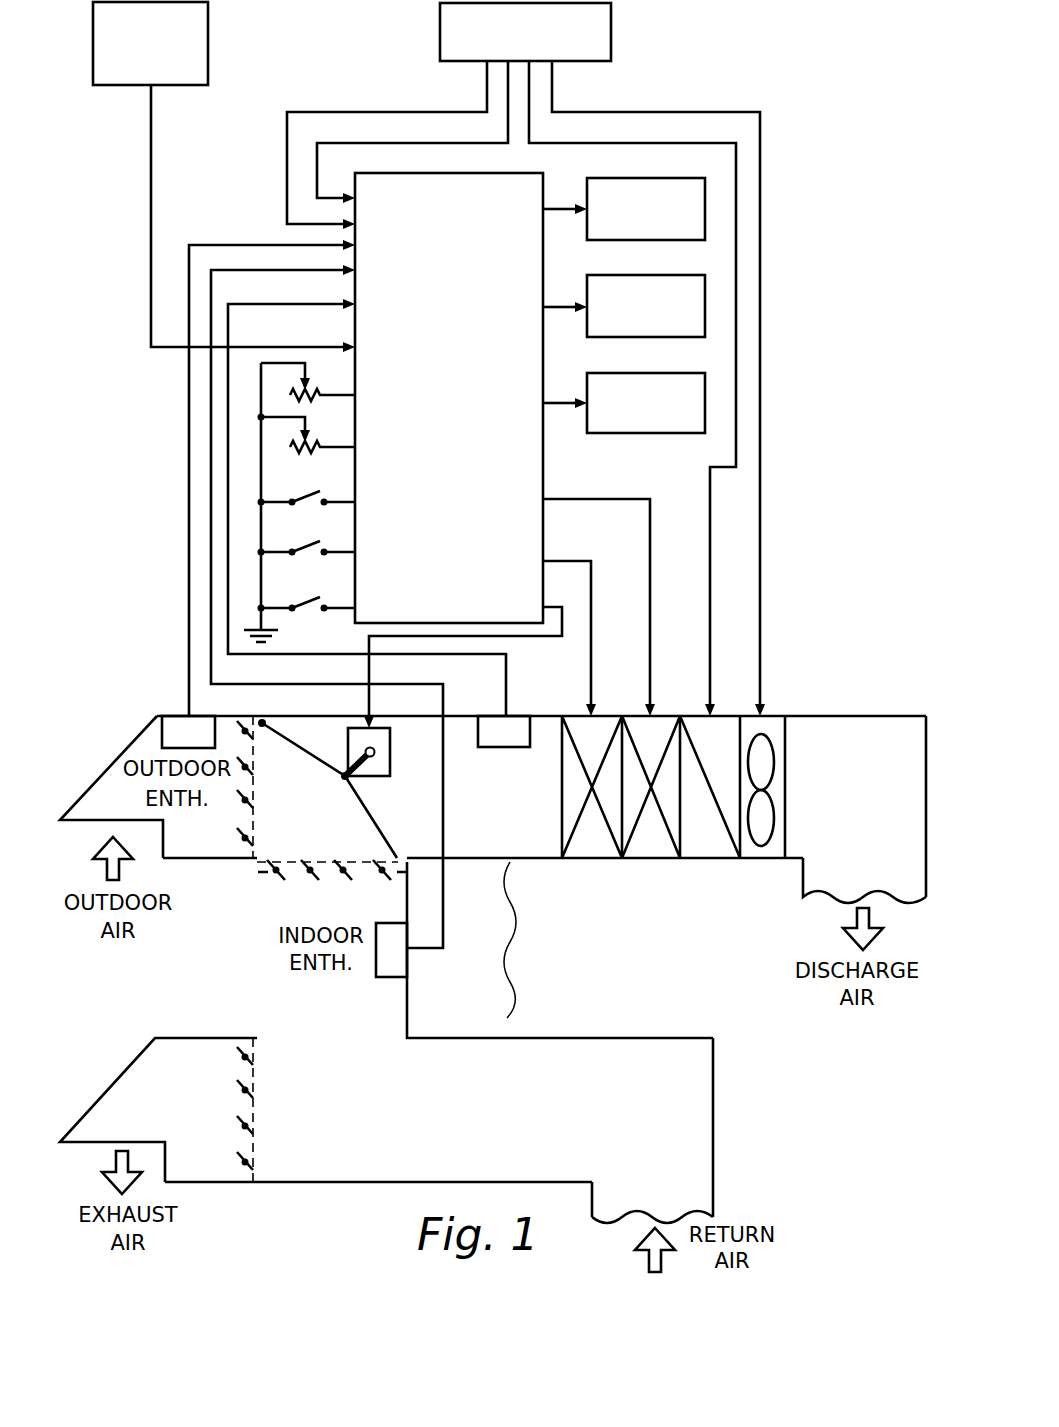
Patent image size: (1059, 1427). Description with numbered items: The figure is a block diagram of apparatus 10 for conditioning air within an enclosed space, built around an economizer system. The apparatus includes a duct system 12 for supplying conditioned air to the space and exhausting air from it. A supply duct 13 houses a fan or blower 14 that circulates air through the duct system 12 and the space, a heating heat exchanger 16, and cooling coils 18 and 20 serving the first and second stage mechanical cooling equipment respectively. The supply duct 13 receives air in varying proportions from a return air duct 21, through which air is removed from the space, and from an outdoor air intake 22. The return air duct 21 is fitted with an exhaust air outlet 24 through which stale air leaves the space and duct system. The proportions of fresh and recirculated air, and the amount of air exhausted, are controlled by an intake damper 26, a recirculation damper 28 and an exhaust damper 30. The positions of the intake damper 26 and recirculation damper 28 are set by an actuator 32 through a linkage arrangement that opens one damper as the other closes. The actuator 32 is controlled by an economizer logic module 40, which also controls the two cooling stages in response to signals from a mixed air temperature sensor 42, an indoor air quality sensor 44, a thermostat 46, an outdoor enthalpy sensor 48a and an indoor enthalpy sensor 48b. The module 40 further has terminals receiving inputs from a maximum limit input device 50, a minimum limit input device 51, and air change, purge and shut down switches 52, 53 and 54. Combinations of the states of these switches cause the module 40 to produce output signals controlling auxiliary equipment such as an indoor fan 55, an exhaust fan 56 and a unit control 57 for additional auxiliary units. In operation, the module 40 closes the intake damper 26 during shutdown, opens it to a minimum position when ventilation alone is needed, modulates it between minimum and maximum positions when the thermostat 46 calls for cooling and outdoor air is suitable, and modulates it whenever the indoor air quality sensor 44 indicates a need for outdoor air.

The apparatus for conditioning air 10 is at (598, 976).
The duct system 12 is at (514, 948).
The supply duct 13 is at (926, 777).
The fan or blower 14 is at (787, 837).
The heating heat exchanger 16 is at (745, 838).
The cooling coil 18 is at (563, 835).
The cooling coil 20 is at (687, 838).
The return air duct 21 is at (713, 1165).
The outdoor air intake 22 is at (93, 820).
The exhaust air outlet 24 is at (100, 1140).
The intake damper 26 is at (237, 831).
The recirculation damper 28 is at (280, 880).
The exhaust damper 30 is at (237, 1164).
The actuator 32 is at (390, 752).
The economizer logic module 40 is at (444, 364).
The mixed air temperature sensor 42 is at (550, 714).
The indoor air quality sensor 44 is at (208, 42).
The thermostat 46 is at (612, 32).
The outdoor enthalpy sensor 48a is at (160, 733).
The indoor enthalpy sensor 48b is at (392, 977).
The maximum limit input device 50 is at (292, 394).
The minimum limit input device 51 is at (294, 447).
The air change switch 52 is at (297, 505).
The purge switch 53 is at (300, 555).
The shut down switch 54 is at (307, 609).
The indoor fan 55 is at (640, 433).
The exhaust fan 56 is at (625, 337).
The unit control 57 is at (640, 240).